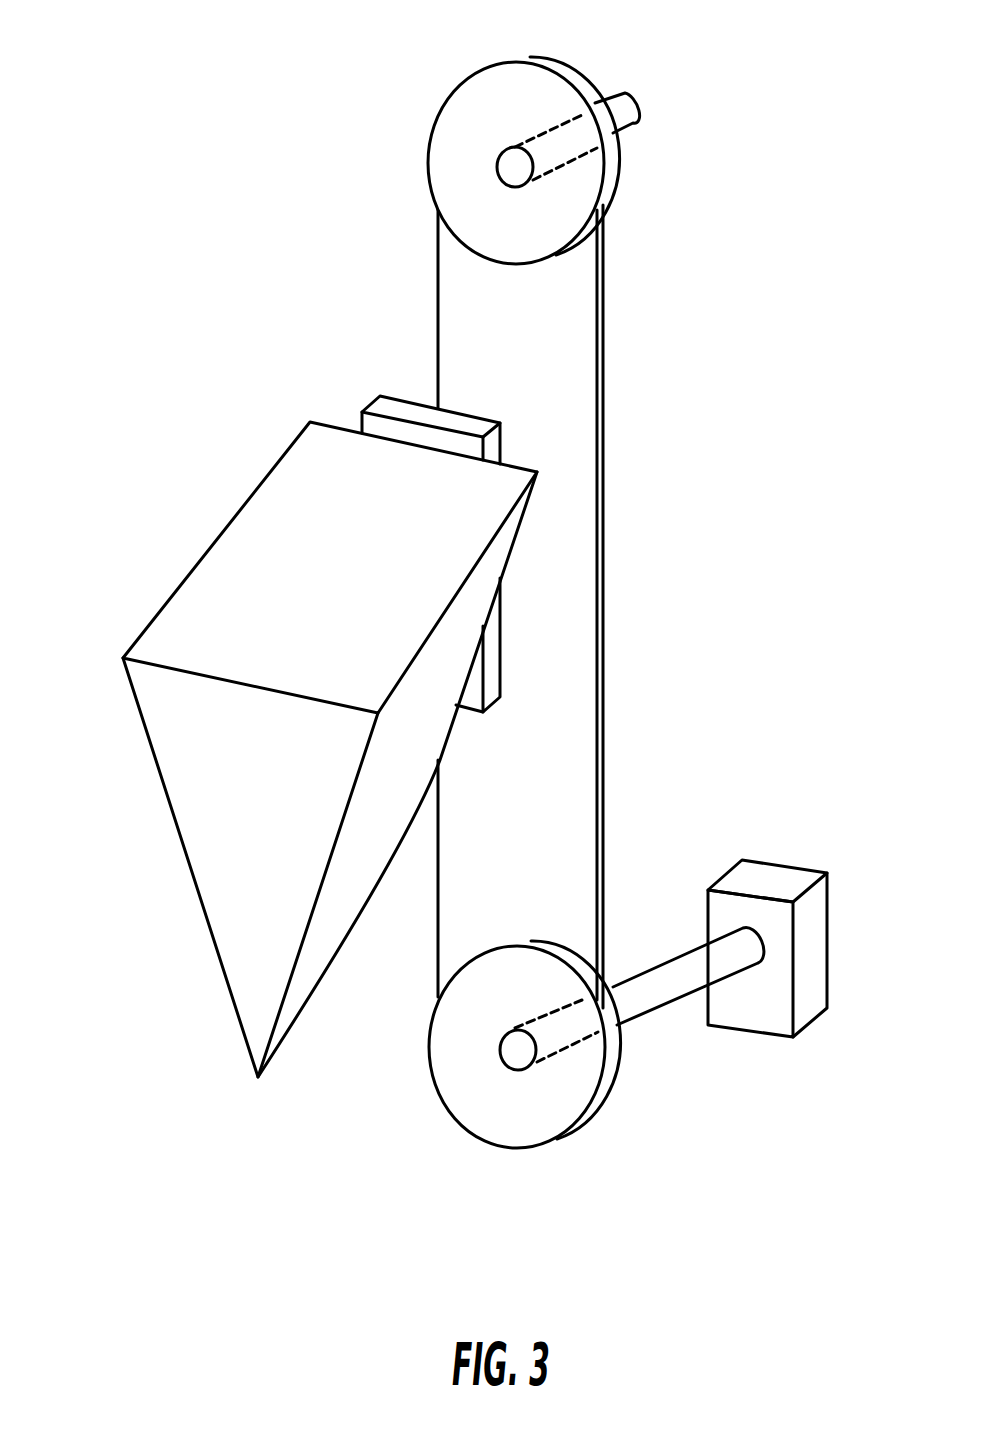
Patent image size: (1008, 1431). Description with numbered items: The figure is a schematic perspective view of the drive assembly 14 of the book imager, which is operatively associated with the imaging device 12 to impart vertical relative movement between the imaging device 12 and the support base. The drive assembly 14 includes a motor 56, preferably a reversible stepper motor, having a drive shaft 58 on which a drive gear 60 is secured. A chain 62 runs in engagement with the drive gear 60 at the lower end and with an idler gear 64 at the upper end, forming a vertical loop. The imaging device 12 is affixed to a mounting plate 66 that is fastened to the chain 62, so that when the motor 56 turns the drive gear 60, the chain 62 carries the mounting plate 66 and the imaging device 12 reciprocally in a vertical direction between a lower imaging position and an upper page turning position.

The imaging device 12 is at (185, 872).
The drive assembly 14 is at (680, 330).
The motor 56 is at (768, 873).
The drive shaft 58 is at (663, 987).
The drive gear 60 is at (462, 1073).
The chain 62 is at (600, 637).
The idler gear 64 is at (523, 93).
The mounting plate 66 is at (403, 407).